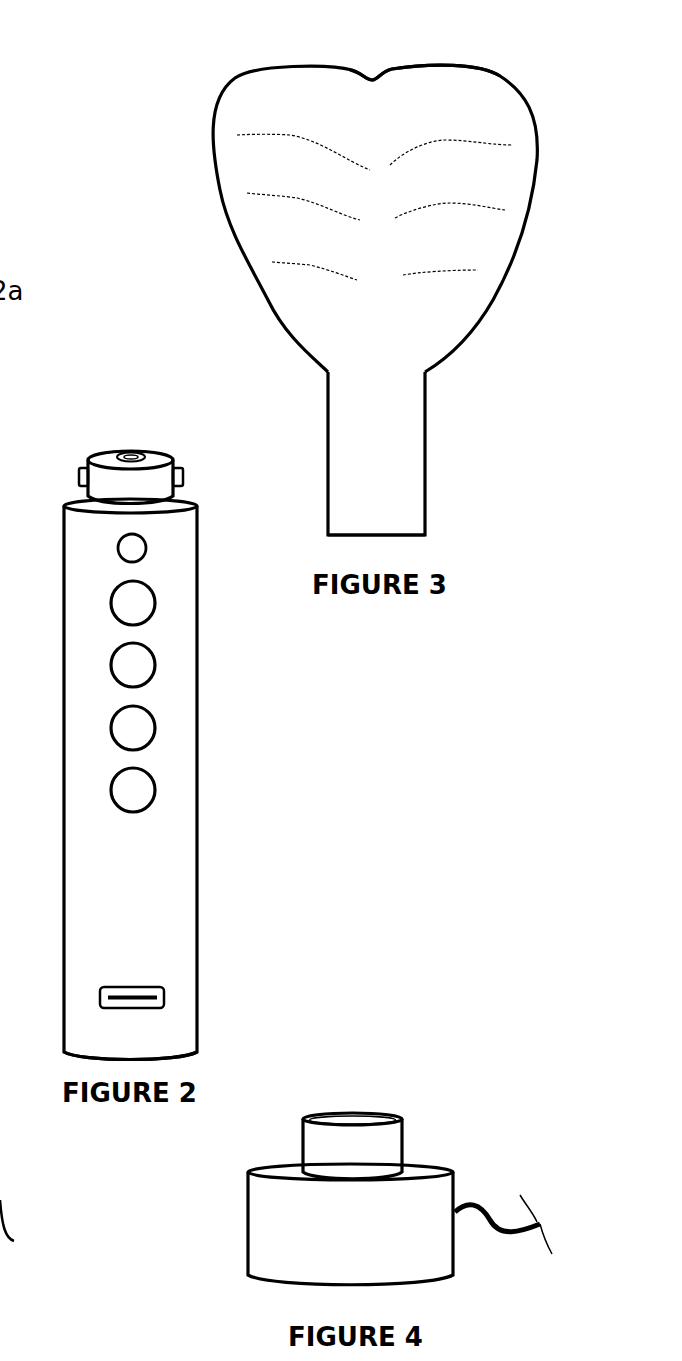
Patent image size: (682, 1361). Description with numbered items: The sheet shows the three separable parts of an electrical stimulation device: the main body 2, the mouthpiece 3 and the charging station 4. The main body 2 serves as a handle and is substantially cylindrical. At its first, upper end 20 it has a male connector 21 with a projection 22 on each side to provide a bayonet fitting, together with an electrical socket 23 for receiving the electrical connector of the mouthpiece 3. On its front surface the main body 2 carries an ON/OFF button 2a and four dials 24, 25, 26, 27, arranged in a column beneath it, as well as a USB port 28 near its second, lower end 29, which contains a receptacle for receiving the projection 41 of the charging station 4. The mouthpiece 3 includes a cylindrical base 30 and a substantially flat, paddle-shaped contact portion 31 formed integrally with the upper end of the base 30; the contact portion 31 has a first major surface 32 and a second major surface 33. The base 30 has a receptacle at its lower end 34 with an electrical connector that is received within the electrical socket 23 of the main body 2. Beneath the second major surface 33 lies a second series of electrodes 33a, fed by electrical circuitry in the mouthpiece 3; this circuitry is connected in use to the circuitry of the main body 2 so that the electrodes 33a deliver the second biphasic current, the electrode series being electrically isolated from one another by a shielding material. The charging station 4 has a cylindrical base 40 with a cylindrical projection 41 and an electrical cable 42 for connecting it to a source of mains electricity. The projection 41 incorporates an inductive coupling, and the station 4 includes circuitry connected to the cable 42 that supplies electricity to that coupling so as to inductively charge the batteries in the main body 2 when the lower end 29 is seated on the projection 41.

In FIG. 2, the main body 2 is at (222, 797).
In FIG. 2, the ON/OFF button 2a is at (132, 548).
In FIG. 3, the mouthpiece 3 is at (194, 88).
In FIG. 4, the charging station 4 is at (208, 1240).
In FIG. 2, the first, upper end 20 is at (190, 428).
In FIG. 2, the male connector 21 is at (96, 452).
In FIG. 2, the projection 22 is at (78, 476).
In FIG. 2, the electrical socket 23 is at (127, 450).
In FIG. 2, the dial 24 is at (133, 603).
In FIG. 2, the dial 25 is at (133, 665).
In FIG. 2, the dial 26 is at (133, 728).
In FIG. 2, the dial 27 is at (133, 790).
In FIG. 2, the USB port 28 is at (106, 987).
In FIG. 2, the second, lower end 29 is at (242, 1014).
In FIG. 3, the cylindrical base 30 is at (393, 477).
In FIG. 3, the contact portion 31 is at (437, 82).
In FIG. 3, the first major surface 32 is at (376, 76).
In FIG. 3, the second major surface 33 is at (393, 265).
In FIG. 3, the second series of electrodes 33a is at (288, 136).
In FIG. 3, the lower end 34 is at (452, 519).
In FIG. 4, the cylindrical base 40 is at (366, 1243).
In FIG. 4, the cylindrical projection 41 is at (369, 1164).
In FIG. 4, the electrical cable 42 is at (483, 1201).